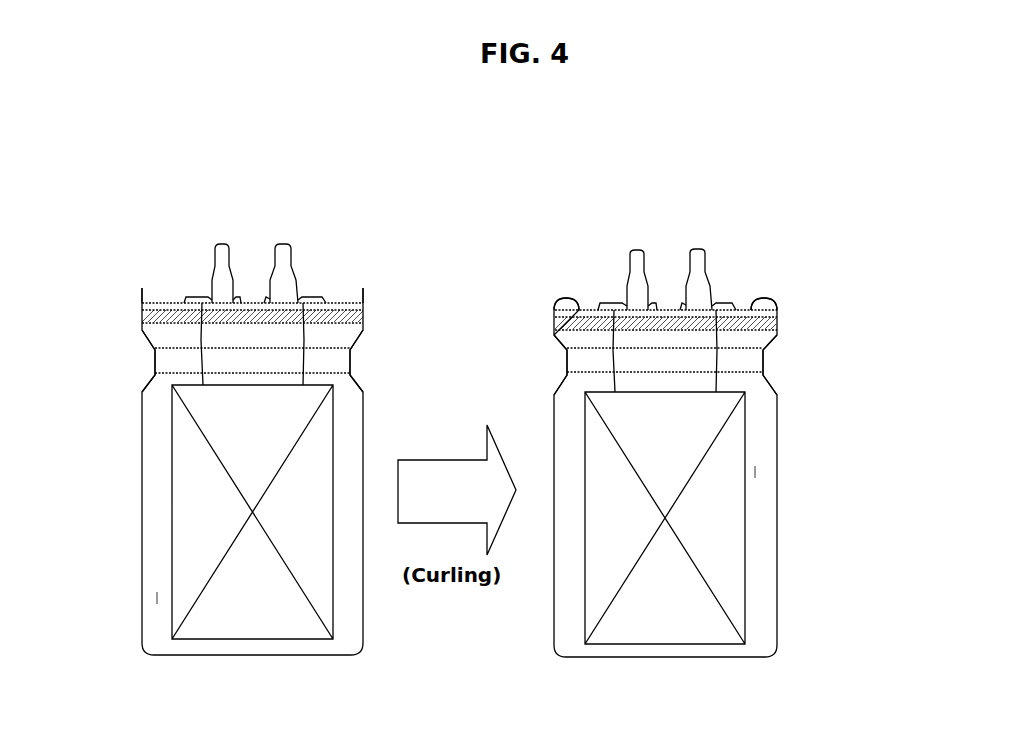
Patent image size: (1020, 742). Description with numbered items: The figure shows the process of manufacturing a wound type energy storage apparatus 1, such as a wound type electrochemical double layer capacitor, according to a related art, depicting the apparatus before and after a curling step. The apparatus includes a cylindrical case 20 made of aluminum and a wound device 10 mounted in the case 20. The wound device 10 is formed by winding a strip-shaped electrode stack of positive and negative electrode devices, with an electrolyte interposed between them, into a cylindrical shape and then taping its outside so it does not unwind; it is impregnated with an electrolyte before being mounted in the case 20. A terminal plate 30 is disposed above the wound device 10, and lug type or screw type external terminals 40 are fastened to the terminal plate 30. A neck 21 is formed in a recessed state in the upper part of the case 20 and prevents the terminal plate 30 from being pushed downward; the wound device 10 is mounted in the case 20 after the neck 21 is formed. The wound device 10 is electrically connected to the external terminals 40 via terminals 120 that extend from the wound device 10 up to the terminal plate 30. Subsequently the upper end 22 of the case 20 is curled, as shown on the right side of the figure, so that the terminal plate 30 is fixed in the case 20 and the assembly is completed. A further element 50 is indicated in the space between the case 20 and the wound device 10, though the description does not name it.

The secondary battery 1 is at (256, 196).
The wound device 10 is at (336, 612).
The cylindrical case 20 is at (141, 525).
The neck 21 is at (155, 360).
The upper end 22 is at (142, 290).
The terminal plate 30 is at (346, 300).
The external terminals 40 is at (282, 248).
The gasket 50 is at (157, 598).
The terminals 120 is at (306, 362).